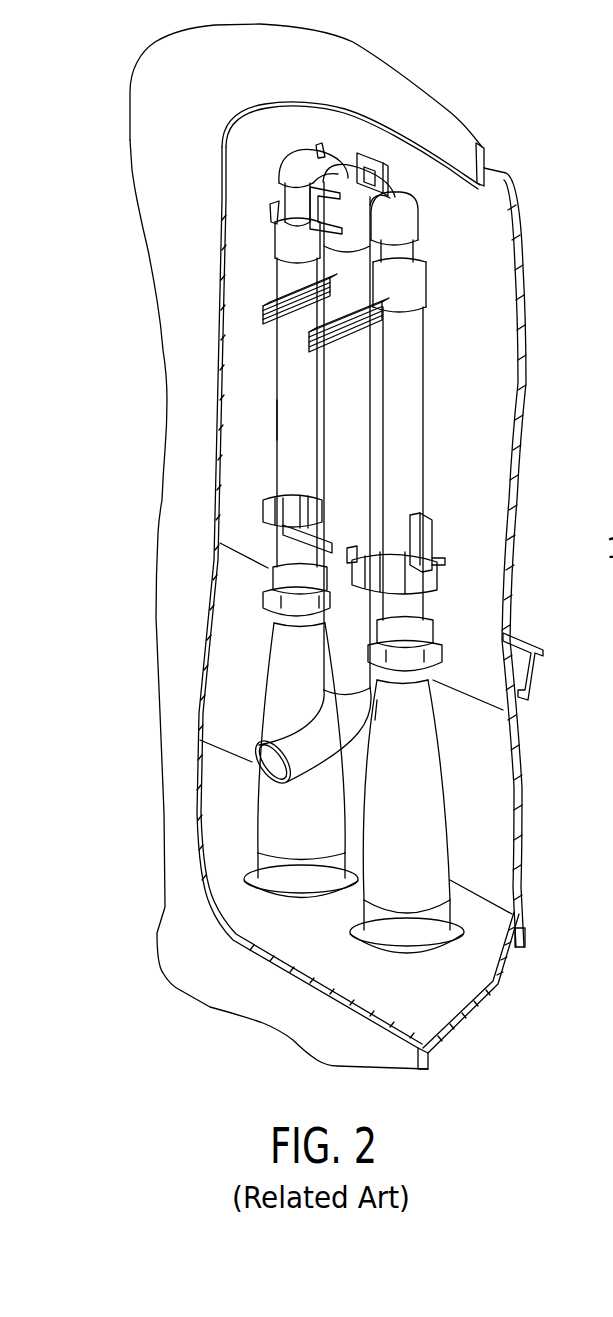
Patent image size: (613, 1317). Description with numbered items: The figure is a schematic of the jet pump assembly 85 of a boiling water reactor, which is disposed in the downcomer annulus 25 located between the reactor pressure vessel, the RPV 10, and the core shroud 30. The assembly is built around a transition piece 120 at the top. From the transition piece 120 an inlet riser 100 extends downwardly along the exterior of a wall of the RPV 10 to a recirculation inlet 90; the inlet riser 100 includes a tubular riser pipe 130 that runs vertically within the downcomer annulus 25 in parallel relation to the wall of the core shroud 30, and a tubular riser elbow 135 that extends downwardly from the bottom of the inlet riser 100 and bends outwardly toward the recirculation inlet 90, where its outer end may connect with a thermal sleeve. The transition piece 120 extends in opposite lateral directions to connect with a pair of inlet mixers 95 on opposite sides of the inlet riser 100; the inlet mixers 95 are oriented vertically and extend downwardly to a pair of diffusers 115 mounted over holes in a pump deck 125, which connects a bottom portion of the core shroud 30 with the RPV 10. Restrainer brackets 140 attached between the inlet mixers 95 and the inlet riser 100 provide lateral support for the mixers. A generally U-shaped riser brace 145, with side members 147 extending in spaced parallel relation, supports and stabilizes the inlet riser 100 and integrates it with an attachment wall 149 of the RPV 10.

The RPV 10 is at (165, 158).
The downcomer annulus 25 is at (455, 192).
The core shroud 30 is at (532, 237).
The jet pump assembly 85 is at (273, 420).
The recirculation inlet 90 is at (265, 727).
The inlet mixers 95 is at (283, 275).
The inlet riser 100 is at (371, 433).
The diffusers 115 is at (258, 813).
The transition piece 120 is at (328, 160).
The pump deck 125 is at (500, 968).
The riser pipe 130 is at (377, 390).
The riser elbow 135 is at (383, 738).
The restrainer brackets 140 is at (262, 512).
The riser brace 145 is at (256, 300).
The side members 147 is at (312, 290).
The attachment wall 149 is at (174, 523).